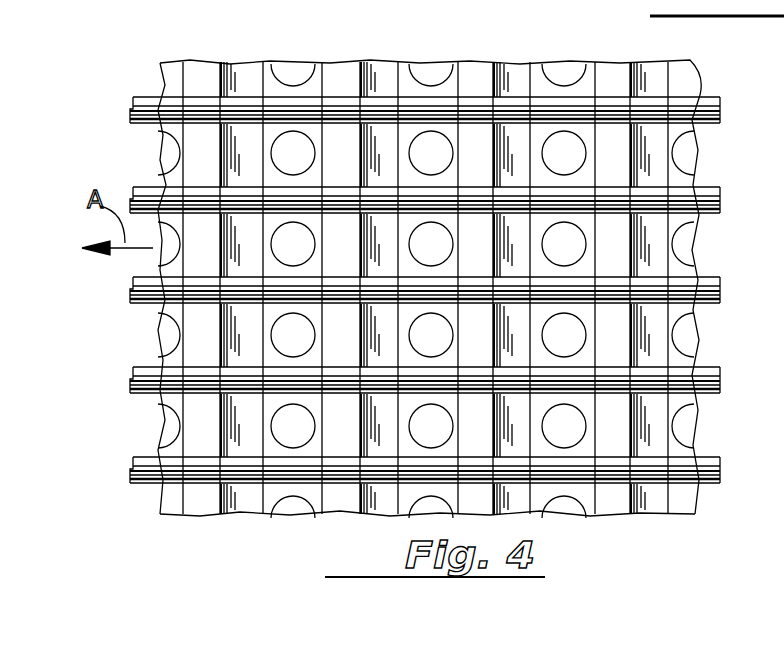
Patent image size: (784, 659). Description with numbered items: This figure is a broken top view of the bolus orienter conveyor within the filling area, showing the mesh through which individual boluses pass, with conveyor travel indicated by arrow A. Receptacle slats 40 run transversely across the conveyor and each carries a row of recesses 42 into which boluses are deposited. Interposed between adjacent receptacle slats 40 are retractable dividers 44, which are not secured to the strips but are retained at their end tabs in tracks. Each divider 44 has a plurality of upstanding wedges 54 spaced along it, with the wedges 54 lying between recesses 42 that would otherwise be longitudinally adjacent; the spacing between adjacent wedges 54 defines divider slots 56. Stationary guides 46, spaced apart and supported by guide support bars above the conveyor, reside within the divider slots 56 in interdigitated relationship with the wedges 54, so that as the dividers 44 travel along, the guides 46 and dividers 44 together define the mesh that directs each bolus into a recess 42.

The receptacle slat 40 is at (322, 72).
The recess 42 is at (433, 143).
The retractable divider 44 is at (525, 62).
The guide 46 is at (437, 267).
The wedge 54 is at (243, 235).
The divider slot 56 is at (197, 96).